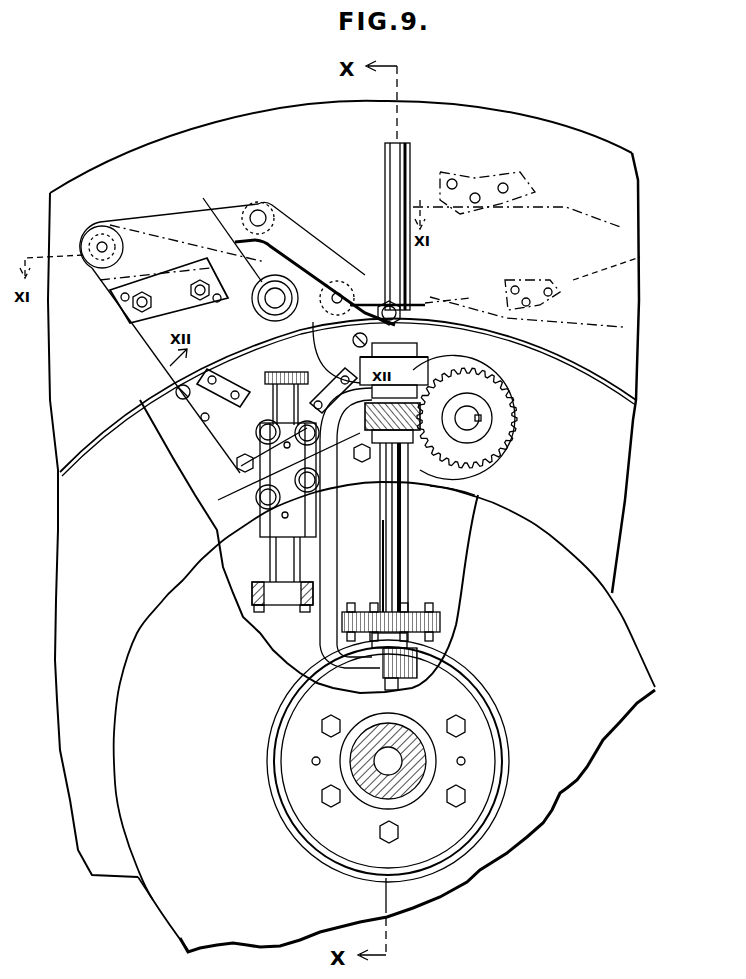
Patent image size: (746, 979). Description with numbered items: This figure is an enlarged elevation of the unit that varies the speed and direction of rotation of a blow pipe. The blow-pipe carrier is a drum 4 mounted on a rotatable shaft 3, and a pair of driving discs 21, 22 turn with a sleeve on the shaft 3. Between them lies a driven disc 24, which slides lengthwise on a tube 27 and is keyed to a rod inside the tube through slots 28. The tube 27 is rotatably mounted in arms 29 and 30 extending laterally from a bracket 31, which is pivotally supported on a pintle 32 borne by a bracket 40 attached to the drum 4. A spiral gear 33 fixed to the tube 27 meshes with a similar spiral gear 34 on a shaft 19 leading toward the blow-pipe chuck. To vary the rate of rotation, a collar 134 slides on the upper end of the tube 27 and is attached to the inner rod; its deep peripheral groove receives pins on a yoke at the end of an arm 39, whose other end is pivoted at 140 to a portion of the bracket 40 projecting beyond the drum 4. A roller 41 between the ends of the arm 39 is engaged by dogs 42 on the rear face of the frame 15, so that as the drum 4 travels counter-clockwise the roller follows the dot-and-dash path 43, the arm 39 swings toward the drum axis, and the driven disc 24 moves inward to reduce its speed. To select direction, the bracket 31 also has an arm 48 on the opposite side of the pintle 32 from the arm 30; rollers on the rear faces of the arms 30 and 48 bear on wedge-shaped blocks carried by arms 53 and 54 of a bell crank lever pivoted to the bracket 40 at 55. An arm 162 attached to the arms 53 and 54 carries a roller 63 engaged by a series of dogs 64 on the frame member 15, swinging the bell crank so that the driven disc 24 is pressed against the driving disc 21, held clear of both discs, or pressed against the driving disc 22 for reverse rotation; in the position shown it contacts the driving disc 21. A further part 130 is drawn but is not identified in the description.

The shaft 3 is at (352, 771).
The drum 4 is at (632, 493).
The frame 15 is at (640, 181).
The shaft 19 is at (480, 428).
The driving disc 21 is at (634, 637).
The driving disc 22 is at (472, 493).
The driven disc 24 is at (446, 590).
The tube 27 is at (402, 550).
The slots 28 is at (383, 567).
The arm 29 is at (408, 665).
The arm 30 is at (460, 320).
The bracket 31 is at (340, 534).
The pintle 32 is at (270, 553).
The spiral gear 33 is at (407, 460).
The spiral gear 34 is at (516, 414).
The arm 39 is at (308, 243).
The bracket 40 is at (128, 343).
The roller 41 is at (260, 208).
The dogs 42 is at (507, 186).
The dot-and-dash line 43 is at (566, 207).
The arm 48 is at (243, 422).
The arm 53 is at (215, 366).
The arm 54 is at (250, 315).
The pivot 55 is at (224, 229).
The roller 63 is at (344, 287).
The dogs 64 is at (642, 256).
The dashed plate 130 is at (630, 312).
The collar 134 is at (415, 305).
The pivot 140 is at (103, 240).
The arm 162 is at (378, 290).